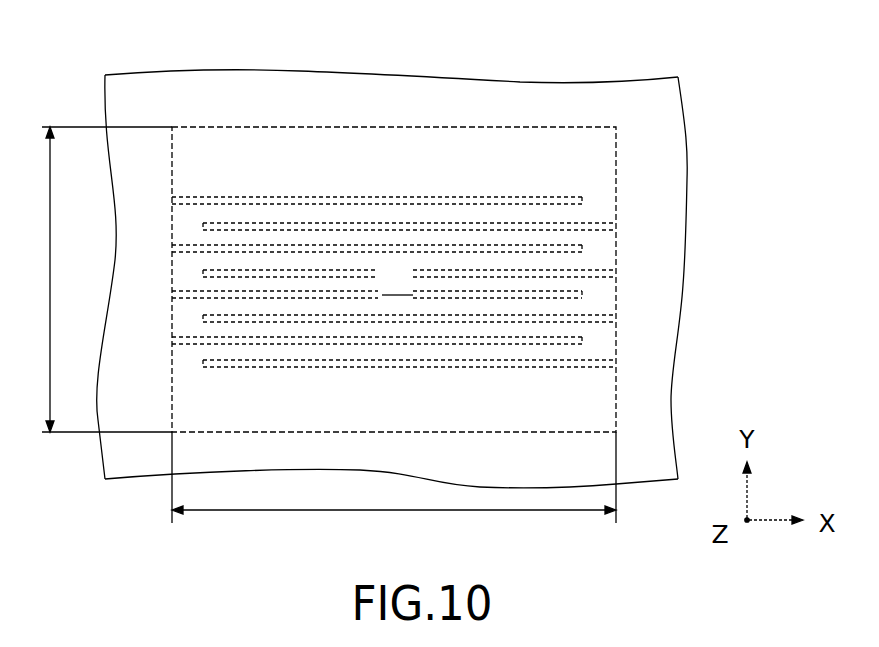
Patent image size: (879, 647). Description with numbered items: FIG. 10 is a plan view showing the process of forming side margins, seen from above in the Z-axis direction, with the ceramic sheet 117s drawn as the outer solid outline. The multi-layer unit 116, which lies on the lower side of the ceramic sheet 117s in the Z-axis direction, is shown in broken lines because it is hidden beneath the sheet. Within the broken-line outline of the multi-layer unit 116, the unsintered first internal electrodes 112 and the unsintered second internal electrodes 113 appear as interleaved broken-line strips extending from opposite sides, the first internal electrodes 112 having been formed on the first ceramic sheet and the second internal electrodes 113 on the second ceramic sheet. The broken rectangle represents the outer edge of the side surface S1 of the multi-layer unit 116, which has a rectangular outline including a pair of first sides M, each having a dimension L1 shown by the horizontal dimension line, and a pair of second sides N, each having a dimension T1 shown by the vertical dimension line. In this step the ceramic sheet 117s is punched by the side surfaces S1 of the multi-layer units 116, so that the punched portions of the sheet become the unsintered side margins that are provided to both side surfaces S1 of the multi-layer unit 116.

The unsintered first internal electrodes 112 is at (273, 340).
The unsintered second internal electrodes 113 is at (462, 363).
The multi-layer unit 116 is at (403, 94).
The ceramic sheet 117s is at (633, 103).
The first sides M is at (273, 127).
The second sides N is at (620, 298).
The side surface S1 is at (396, 281).
The dimension of second side T1 is at (89, 279).
The dimension of first side L1 is at (394, 486).